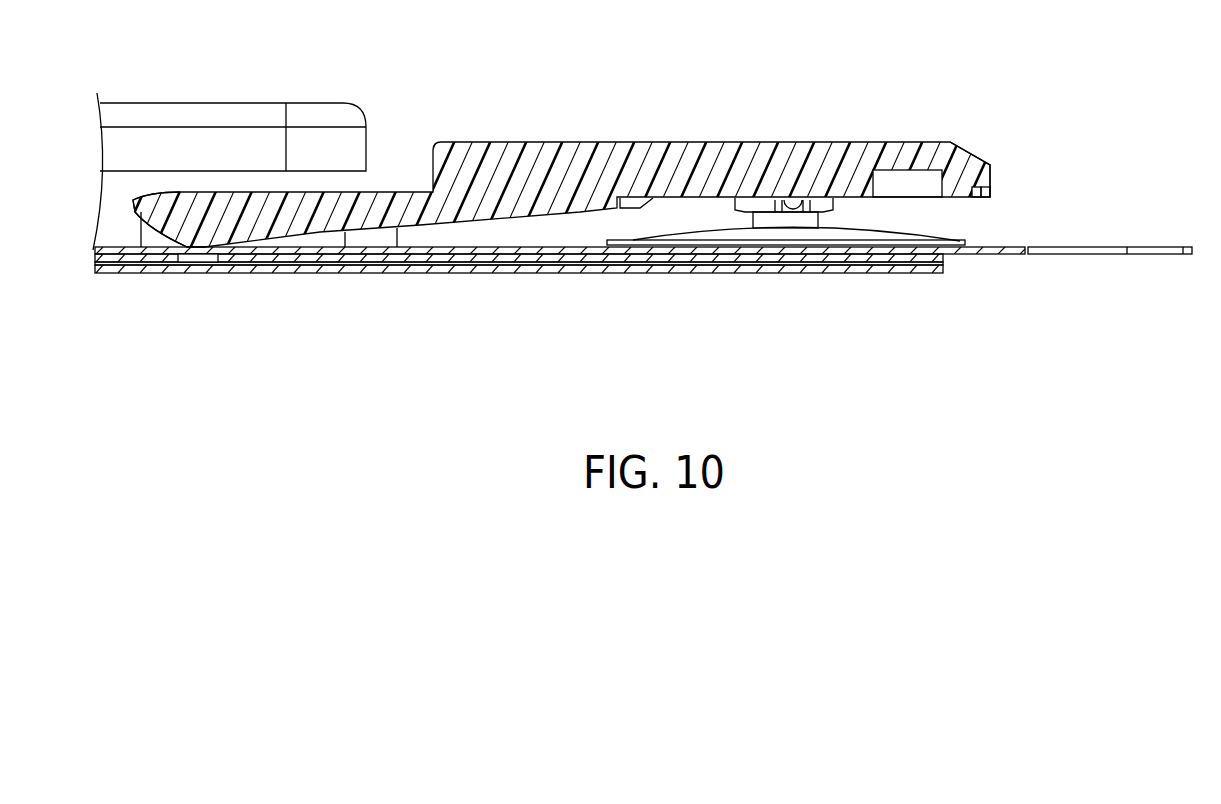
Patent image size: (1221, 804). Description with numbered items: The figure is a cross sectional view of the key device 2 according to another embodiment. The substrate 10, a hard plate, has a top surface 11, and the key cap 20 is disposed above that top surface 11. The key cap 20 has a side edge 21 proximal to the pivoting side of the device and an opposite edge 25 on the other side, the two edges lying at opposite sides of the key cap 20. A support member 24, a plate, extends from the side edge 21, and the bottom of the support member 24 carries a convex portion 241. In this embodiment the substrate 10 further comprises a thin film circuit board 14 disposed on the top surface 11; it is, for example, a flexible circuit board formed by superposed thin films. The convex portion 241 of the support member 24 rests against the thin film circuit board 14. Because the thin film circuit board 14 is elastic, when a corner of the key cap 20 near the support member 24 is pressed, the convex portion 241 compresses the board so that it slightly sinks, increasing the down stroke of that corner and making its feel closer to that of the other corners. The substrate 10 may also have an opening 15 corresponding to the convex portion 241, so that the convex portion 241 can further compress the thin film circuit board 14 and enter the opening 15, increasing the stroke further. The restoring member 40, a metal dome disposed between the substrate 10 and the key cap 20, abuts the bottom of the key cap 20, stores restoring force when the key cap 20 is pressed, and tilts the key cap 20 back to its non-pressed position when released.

The key device 2 is at (996, 100).
The substrate 10 is at (362, 258).
The top surface 11 is at (1010, 247).
The thin film circuit board 14 is at (288, 250).
The opening 15 is at (205, 260).
The key cap 20 is at (220, 102).
The side edge 21 is at (433, 163).
The support member 24 is at (163, 206).
The convex portion 241 is at (190, 250).
The opposite edge 25 is at (983, 153).
The restoring member 40 is at (810, 238).